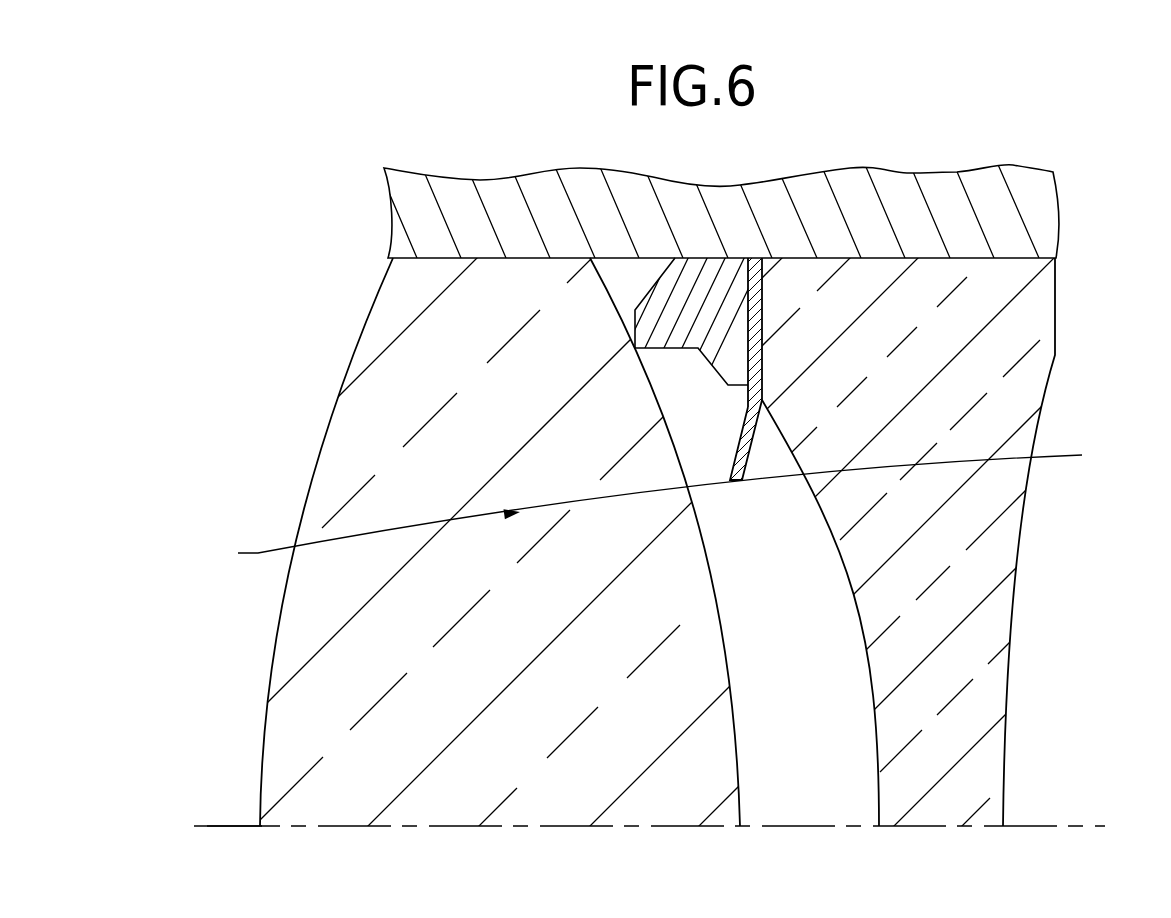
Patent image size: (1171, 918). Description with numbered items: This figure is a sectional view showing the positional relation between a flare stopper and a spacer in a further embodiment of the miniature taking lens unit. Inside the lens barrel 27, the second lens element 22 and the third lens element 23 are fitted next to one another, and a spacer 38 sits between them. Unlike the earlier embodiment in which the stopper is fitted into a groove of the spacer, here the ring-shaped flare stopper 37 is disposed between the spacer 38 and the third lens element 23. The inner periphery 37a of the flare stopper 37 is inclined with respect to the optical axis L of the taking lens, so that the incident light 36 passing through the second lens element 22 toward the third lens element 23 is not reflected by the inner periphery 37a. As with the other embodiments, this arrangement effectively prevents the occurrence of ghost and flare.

The lens barrel 27 is at (1046, 210).
The second lens element 22 is at (383, 405).
The third lens element 23 is at (990, 695).
The spacer 38 is at (649, 276).
The flare stopper 37 is at (772, 450).
The inner periphery 37a is at (736, 482).
The incident light 36 is at (258, 553).
The optical axis L is at (230, 825).